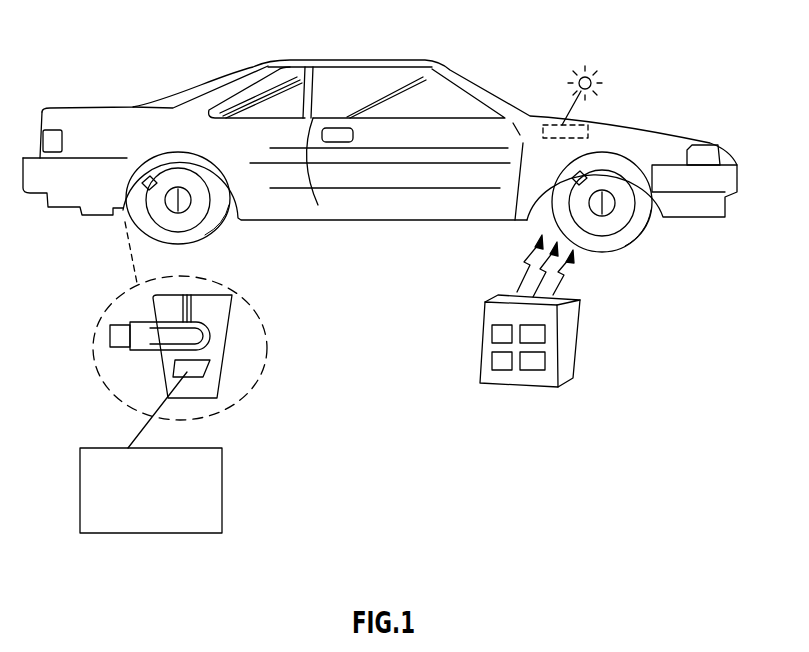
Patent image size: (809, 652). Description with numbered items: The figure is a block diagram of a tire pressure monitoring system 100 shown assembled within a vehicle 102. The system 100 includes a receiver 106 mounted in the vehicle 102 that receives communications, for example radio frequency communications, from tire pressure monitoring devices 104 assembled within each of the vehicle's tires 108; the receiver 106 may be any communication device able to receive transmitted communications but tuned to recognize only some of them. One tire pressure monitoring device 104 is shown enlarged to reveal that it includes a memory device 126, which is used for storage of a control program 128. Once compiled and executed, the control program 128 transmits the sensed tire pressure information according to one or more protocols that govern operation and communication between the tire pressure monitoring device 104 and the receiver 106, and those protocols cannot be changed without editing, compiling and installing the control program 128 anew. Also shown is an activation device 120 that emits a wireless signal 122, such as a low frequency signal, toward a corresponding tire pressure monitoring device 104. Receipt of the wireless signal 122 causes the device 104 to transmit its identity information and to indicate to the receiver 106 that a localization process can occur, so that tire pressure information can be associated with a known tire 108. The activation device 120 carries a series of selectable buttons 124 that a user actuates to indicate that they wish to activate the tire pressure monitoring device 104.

The tire pressure monitoring system 100 is at (399, 220).
The vehicle 102 is at (267, 64).
The tire pressure monitoring device 104 is at (150, 182).
The receiver 106 is at (599, 102).
The tire 108 is at (213, 223).
The activation device 120 is at (504, 362).
The wireless signal 122 is at (590, 280).
The selectable buttons 124 is at (485, 384).
The memory device 126 is at (207, 372).
The control program 128 is at (142, 534).